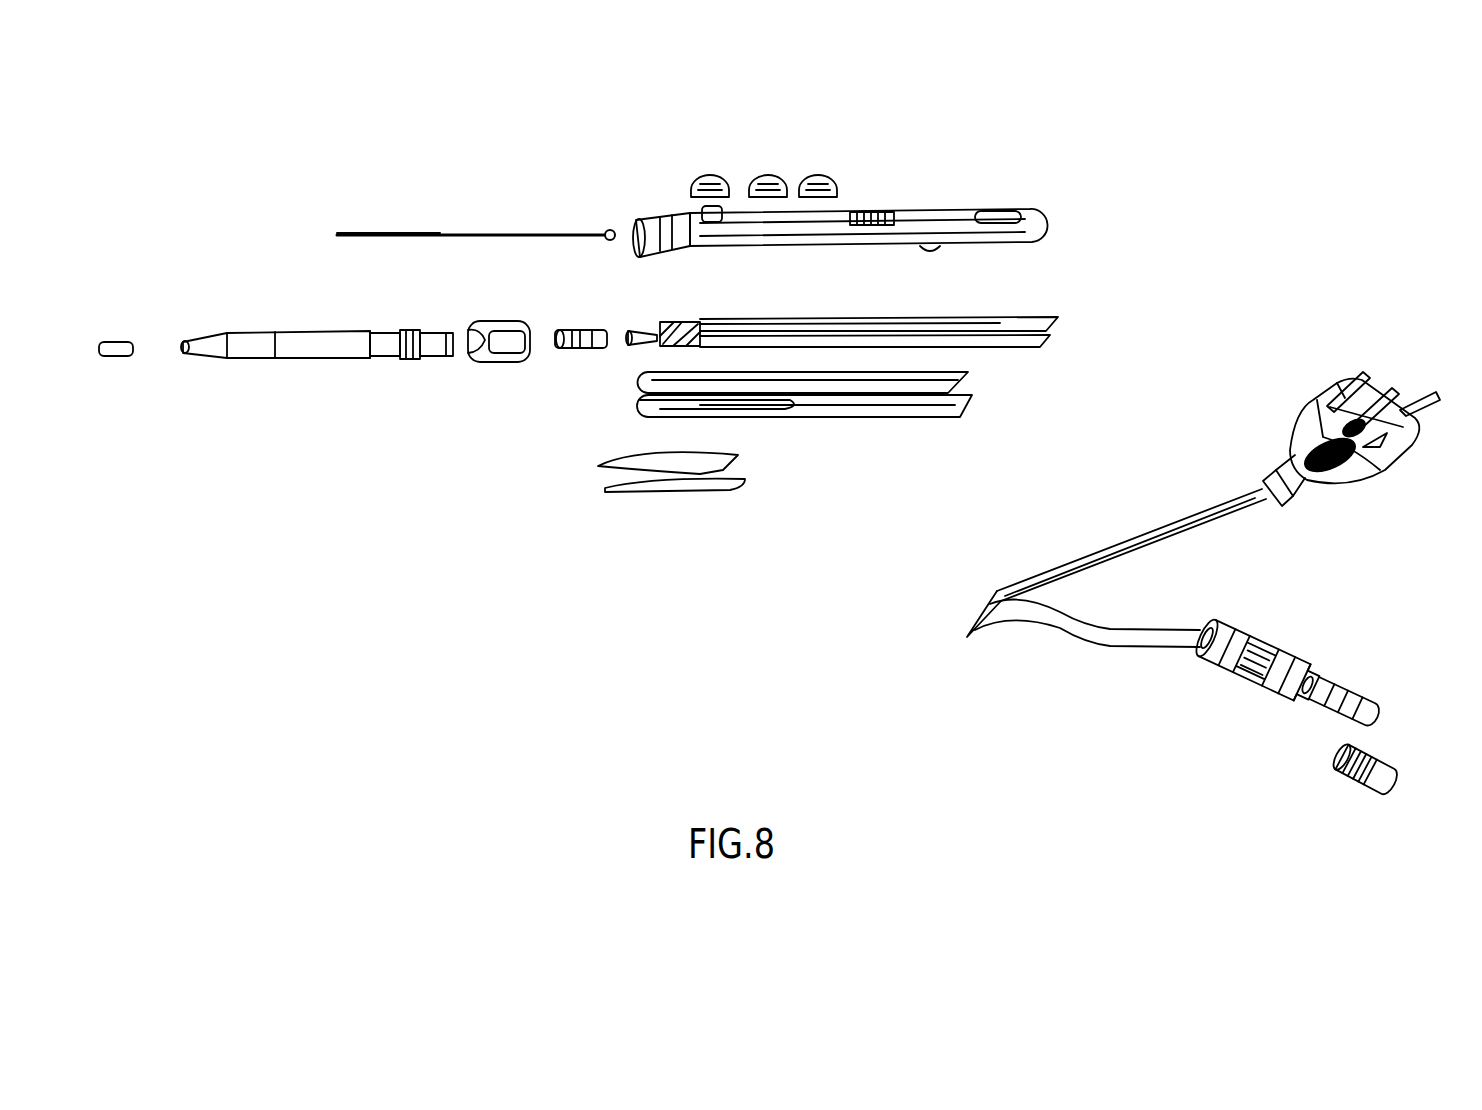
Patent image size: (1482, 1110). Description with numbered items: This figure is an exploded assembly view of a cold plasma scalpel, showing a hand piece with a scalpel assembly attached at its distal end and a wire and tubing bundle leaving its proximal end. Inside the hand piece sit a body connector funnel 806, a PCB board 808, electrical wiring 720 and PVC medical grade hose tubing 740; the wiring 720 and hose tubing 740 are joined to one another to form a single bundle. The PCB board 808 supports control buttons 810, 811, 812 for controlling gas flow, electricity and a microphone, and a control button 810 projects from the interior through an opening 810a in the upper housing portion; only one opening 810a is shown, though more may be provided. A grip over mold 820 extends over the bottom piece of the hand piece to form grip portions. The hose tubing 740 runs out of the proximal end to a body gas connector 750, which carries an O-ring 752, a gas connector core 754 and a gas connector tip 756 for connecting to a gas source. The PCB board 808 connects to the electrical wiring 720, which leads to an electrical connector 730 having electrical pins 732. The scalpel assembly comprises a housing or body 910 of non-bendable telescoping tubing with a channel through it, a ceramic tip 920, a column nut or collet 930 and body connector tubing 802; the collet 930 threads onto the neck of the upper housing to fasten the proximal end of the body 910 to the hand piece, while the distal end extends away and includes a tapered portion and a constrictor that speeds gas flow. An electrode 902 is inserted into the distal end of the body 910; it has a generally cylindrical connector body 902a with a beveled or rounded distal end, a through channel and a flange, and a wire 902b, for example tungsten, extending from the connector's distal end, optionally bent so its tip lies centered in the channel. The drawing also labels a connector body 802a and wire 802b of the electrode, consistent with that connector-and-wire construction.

The electrical wiring 720 is at (910, 323).
The electrical connector 730 is at (1369, 460).
The electrical pins 732 is at (1423, 407).
The hose tubing 740 is at (982, 332).
The body gas connector 750 is at (1228, 662).
The O-ring 752 is at (1302, 693).
The gas connector core 754 is at (1355, 715).
The gas connector tip 756 is at (1376, 784).
The body connector tubing 802 is at (575, 343).
The connector body 802a is at (935, 228).
The wire 802b is at (855, 413).
The body connector funnel 806 is at (633, 341).
The PCB board 808 is at (710, 327).
The control button 810 is at (706, 190).
The opening 810a is at (712, 213).
The control button 811 is at (768, 180).
The control button 812 is at (825, 180).
The grip over mold 820 is at (660, 484).
The electrode 902 is at (493, 232).
The connector body 902a is at (607, 228).
The wire 902b is at (397, 238).
The housing or body 910 is at (302, 350).
The ceramic tip 920 is at (115, 346).
The column nut or collet 930 is at (510, 350).